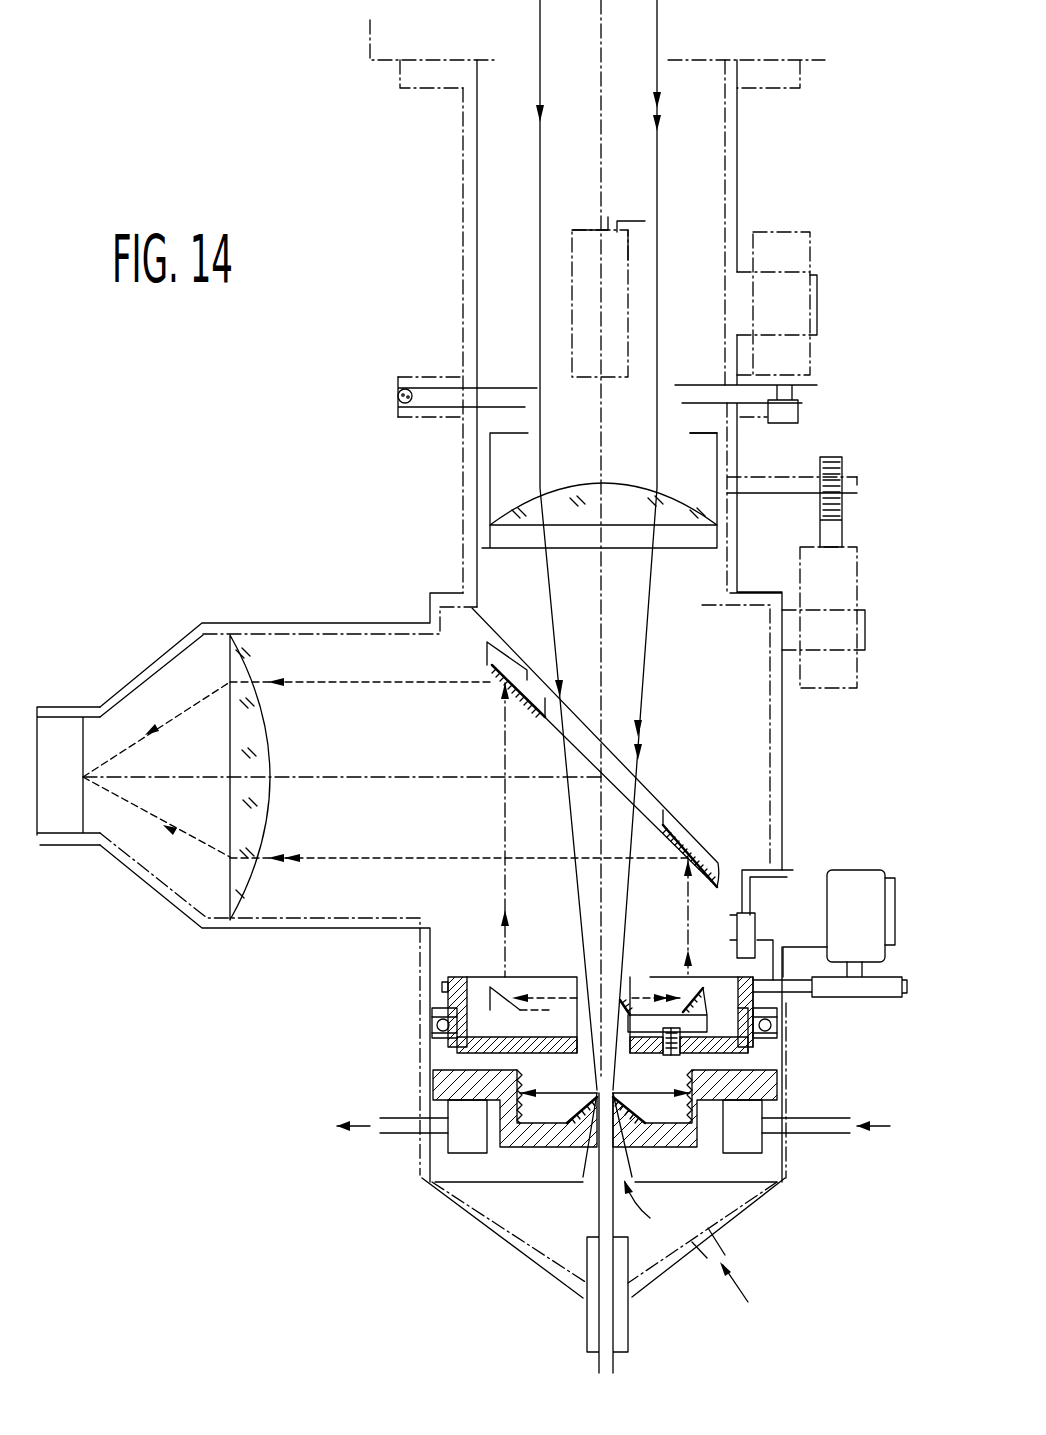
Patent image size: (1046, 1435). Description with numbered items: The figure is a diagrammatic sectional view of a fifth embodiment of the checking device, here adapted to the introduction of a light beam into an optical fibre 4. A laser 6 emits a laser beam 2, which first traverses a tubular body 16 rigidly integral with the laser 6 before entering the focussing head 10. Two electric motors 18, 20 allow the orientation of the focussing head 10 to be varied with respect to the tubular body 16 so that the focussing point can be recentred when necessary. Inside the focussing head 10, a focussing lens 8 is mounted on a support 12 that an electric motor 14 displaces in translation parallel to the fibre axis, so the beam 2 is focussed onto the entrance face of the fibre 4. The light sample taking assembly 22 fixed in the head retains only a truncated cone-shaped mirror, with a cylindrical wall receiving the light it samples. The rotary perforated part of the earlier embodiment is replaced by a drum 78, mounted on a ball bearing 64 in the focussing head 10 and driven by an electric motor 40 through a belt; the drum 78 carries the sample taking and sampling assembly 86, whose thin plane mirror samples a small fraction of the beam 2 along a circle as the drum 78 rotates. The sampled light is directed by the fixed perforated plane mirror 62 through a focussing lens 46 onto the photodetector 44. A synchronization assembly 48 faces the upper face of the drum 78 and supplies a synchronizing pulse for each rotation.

The laser beam 2 is at (657, 46).
The optical fibre 4 is at (600, 1358).
The laser 6 is at (393, 62).
The focussing lens 8 is at (696, 518).
The focussing head 10 is at (333, 623).
The support 12 is at (483, 488).
The electric motor 14 is at (848, 570).
The tubular body 16 is at (468, 270).
The electric motor 18 is at (630, 257).
The electric motor 20 is at (810, 256).
The light sample taking assembly 22 is at (483, 1172).
The electric motor 40 is at (850, 905).
The photodetector 44 is at (57, 823).
The focussing lens 46 is at (258, 740).
The synchronization assembly 48 is at (742, 912).
The perforated plane mirror 62 is at (492, 675).
The ball bearing 64 is at (763, 1033).
The drum 78 is at (457, 1042).
The sample taking and sampling assembly 86 is at (646, 1024).